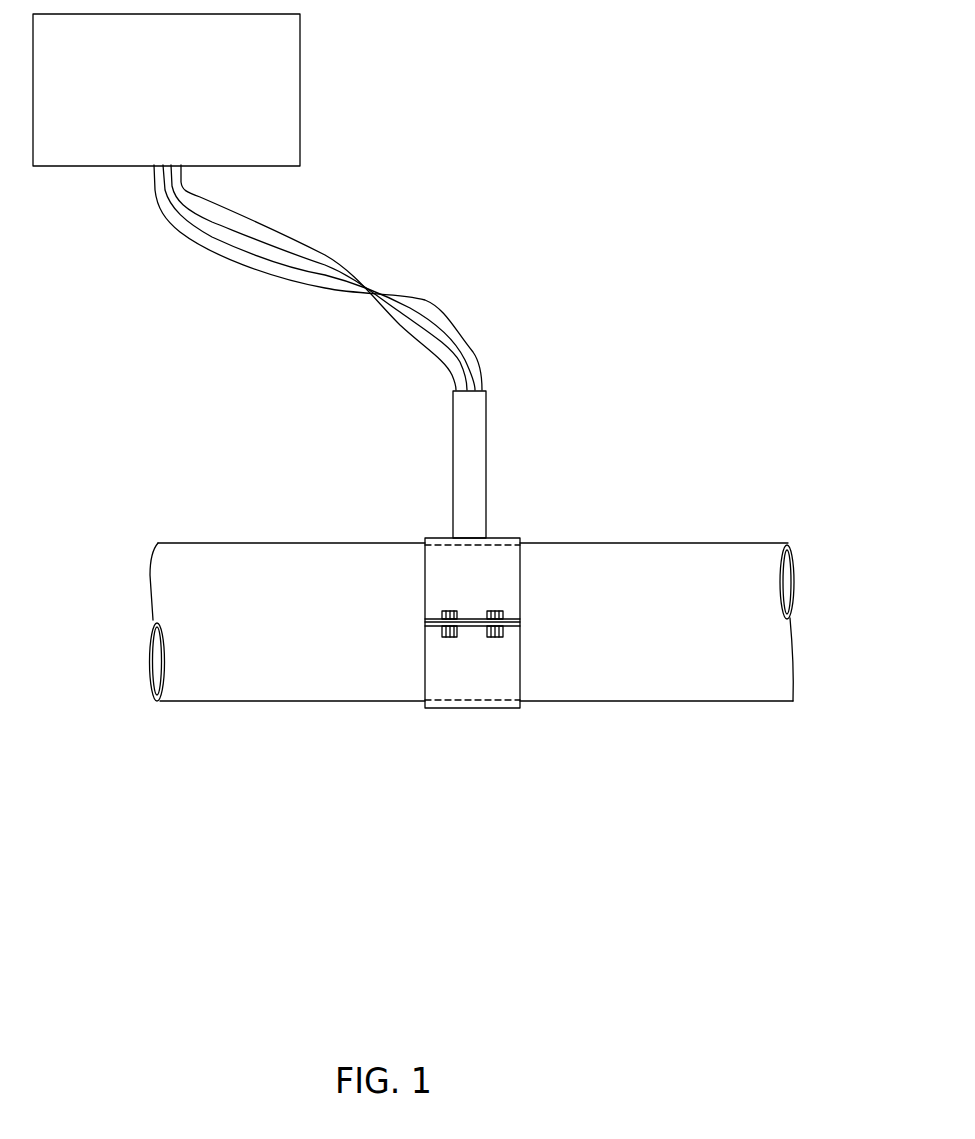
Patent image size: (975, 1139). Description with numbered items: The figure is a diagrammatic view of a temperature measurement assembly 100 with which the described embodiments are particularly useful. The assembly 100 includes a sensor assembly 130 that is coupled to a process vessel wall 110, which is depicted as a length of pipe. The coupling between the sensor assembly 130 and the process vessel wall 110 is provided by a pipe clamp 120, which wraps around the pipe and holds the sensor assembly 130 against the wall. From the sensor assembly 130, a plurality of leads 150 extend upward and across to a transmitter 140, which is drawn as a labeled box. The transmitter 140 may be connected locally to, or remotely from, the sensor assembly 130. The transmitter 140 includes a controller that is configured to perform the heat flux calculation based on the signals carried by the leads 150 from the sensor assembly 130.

The temperature measurement assembly 100 is at (678, 170).
The process vessel wall 110 is at (600, 573).
The pipe clamp 120 is at (493, 559).
The sensor assembly 130 is at (487, 421).
The transmitter 140 is at (300, 119).
The leads 150 is at (303, 249).